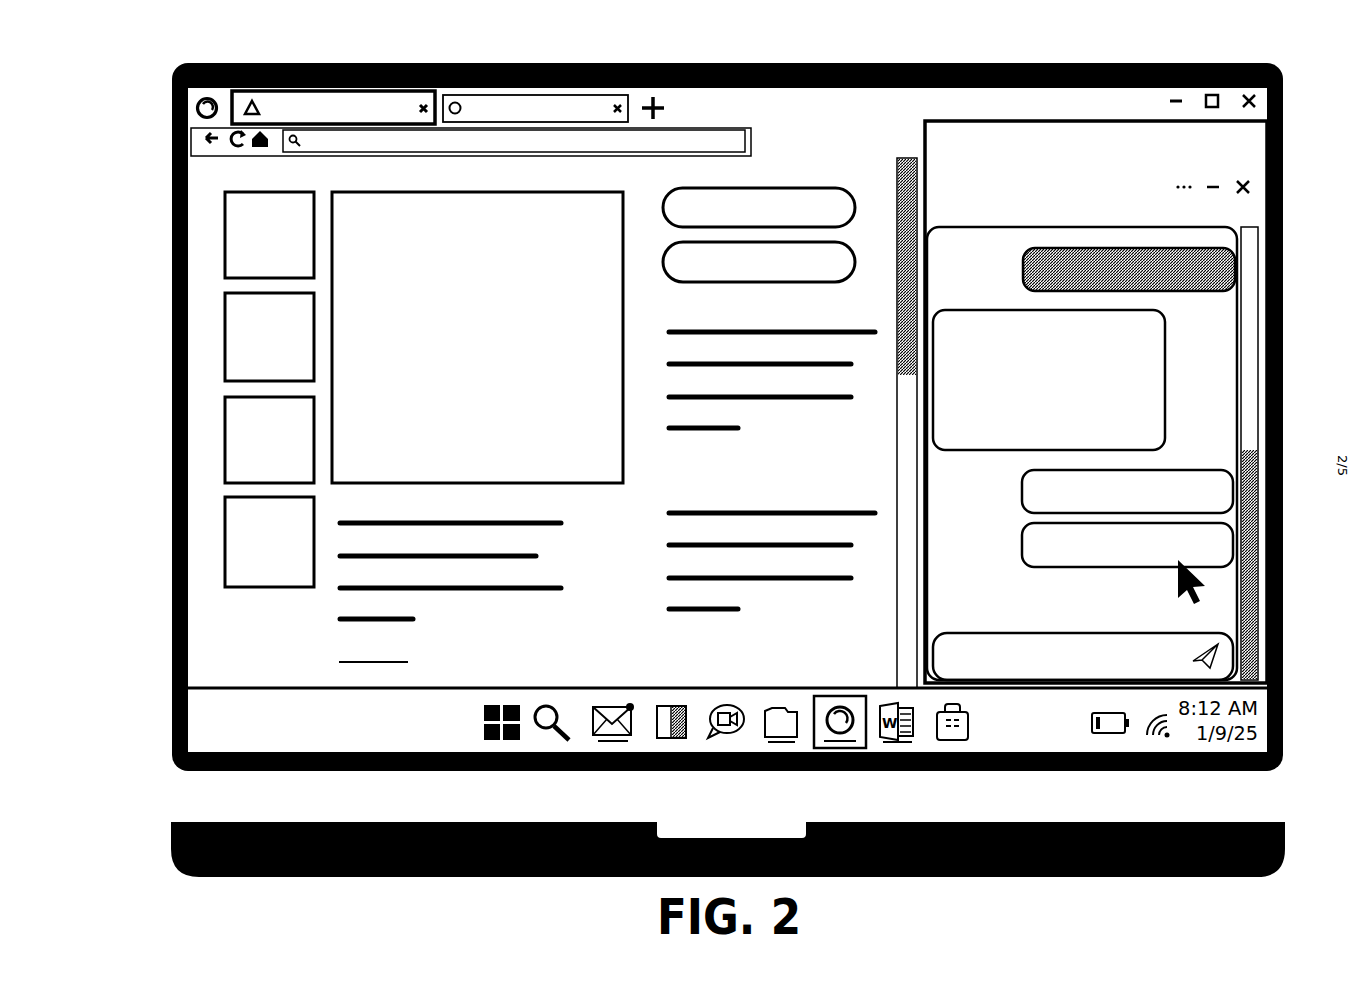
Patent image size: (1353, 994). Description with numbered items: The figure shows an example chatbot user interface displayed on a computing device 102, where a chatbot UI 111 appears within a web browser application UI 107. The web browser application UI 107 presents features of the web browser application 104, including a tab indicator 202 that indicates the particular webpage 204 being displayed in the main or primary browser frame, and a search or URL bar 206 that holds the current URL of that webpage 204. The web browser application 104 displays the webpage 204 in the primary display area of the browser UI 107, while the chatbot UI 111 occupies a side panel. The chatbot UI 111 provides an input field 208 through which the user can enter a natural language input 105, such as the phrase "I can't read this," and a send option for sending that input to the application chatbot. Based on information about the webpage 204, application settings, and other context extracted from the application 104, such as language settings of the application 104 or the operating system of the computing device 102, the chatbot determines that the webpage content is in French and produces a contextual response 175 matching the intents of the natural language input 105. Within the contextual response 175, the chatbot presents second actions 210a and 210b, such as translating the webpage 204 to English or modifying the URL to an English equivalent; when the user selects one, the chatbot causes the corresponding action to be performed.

The computing device 102 is at (1291, 61).
The web browser application 104 is at (190, 108).
The tab indicator 202 is at (262, 104).
The URL bar 206 is at (355, 132).
The web browser application UI 107 is at (732, 100).
The chatbot UI 111 is at (998, 173).
The webpage 204 is at (204, 186).
The natural language input 105 is at (1210, 273).
The contextual response 175 is at (1148, 338).
The second action 210a is at (1228, 496).
The second action 210b is at (1228, 544).
The input field 208 is at (1222, 658).